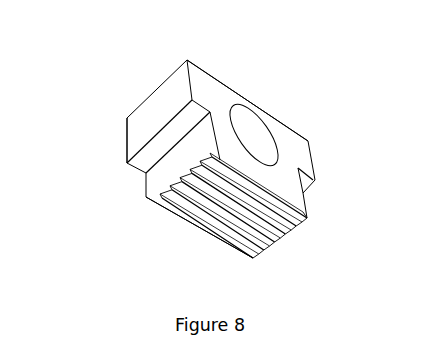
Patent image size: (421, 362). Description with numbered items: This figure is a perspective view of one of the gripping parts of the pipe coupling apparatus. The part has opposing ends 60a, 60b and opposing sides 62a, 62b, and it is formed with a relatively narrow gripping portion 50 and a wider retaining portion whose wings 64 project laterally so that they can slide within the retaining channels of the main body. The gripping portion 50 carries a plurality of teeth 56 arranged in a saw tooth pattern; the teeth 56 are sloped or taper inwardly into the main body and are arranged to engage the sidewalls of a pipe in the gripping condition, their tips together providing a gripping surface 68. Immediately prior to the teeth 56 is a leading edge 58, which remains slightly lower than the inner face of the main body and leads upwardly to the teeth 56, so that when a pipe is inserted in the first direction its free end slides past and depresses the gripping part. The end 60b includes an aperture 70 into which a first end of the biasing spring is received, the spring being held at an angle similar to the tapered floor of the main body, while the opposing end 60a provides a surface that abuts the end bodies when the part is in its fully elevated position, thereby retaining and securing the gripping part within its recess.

The gripping portion 50 is at (148, 186).
The teeth 56 is at (243, 223).
The leading edge 58 is at (172, 215).
The opposing end 60a is at (127, 151).
The opposing end 60b is at (213, 88).
The opposing side 62a is at (135, 125).
The opposing side 62b is at (303, 180).
The wings 64 is at (162, 123).
The gripping surface 68 is at (270, 202).
The aperture 70 is at (248, 122).